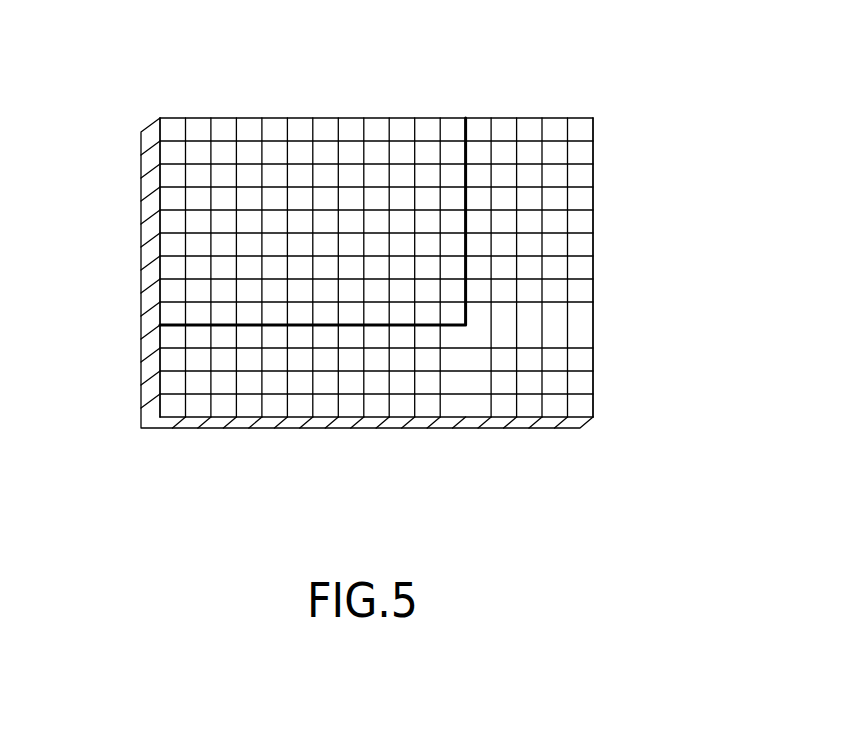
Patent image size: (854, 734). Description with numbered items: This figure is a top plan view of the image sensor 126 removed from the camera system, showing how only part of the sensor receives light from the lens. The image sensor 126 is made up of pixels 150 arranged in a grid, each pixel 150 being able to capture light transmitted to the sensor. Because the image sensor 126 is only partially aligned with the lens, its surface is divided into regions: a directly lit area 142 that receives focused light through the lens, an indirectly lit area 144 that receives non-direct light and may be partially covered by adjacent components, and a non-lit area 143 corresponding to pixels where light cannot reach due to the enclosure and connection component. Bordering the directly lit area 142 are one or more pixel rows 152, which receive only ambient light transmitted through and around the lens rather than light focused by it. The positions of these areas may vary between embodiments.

The image sensor 126 is at (600, 78).
The directly lit area 142 is at (329, 172).
The pixel rows 152 is at (480, 127).
The non-lit area 143 is at (580, 130).
The pixels 150 is at (580, 223).
The indirectly lit area 144 is at (543, 328).